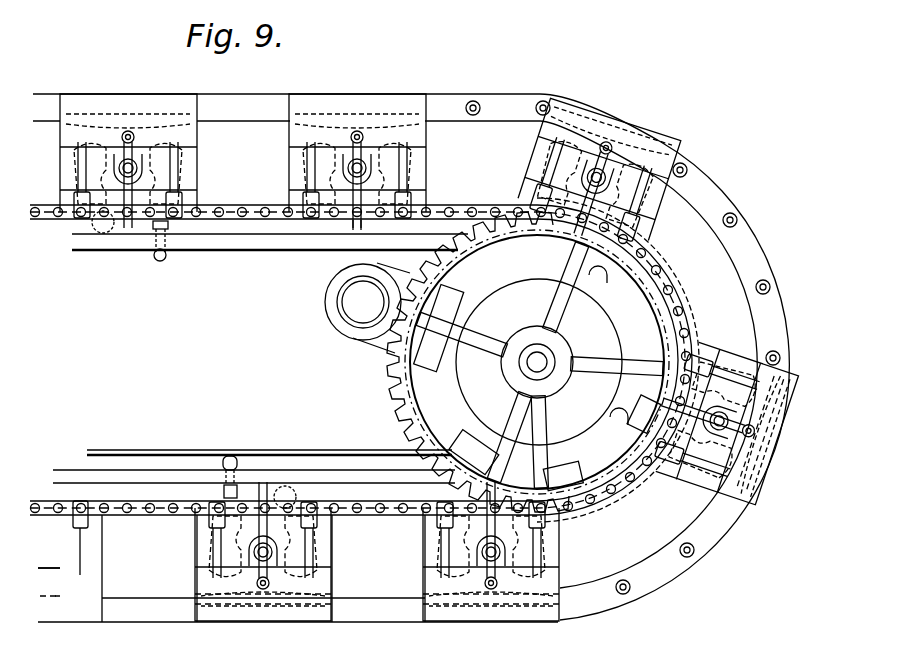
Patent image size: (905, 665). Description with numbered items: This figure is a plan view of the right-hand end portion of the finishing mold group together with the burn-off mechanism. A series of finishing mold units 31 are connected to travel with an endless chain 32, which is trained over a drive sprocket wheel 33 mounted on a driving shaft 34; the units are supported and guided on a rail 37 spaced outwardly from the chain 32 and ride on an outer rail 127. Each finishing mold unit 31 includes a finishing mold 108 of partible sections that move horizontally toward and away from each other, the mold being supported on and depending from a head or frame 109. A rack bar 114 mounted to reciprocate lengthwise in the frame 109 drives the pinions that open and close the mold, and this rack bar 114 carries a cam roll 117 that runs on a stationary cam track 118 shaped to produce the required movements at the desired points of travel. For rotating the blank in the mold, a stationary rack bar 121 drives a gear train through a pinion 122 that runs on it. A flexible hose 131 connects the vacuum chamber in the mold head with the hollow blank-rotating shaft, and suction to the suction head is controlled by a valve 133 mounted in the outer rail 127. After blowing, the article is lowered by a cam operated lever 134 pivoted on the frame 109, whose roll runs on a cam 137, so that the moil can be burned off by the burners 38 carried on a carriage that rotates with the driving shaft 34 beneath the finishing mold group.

The finishing mold unit 31 is at (201, 167).
The endless chain 32 is at (247, 206).
The drive sprocket wheel 33 is at (452, 252).
The driving shaft 34 is at (520, 368).
The rail 37 is at (525, 99).
The burner 38 is at (327, 328).
The finishing mold 108 is at (335, 566).
The head or frame 109 is at (377, 108).
The rack bar 114 is at (158, 262).
The cam roll 117 is at (251, 457).
The cam track 118 is at (206, 450).
The rack bar 121 is at (655, 338).
The pinion 122 is at (104, 229).
The outer rail 127 is at (750, 249).
The flexible hose 131 is at (277, 606).
The valve 133 is at (771, 283).
The cam operated lever 134 is at (356, 232).
The cam 137 is at (558, 468).